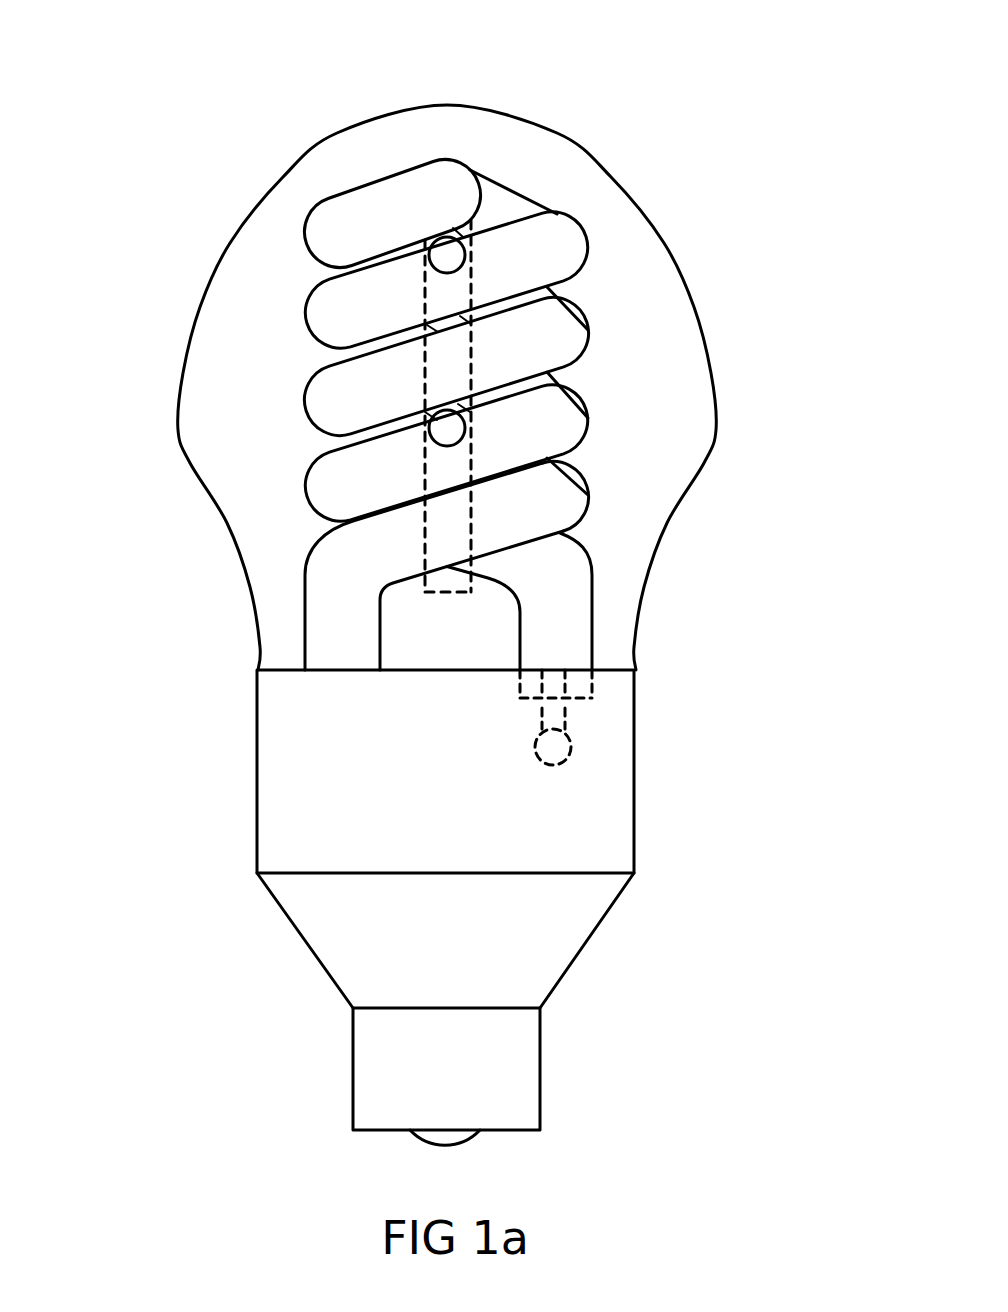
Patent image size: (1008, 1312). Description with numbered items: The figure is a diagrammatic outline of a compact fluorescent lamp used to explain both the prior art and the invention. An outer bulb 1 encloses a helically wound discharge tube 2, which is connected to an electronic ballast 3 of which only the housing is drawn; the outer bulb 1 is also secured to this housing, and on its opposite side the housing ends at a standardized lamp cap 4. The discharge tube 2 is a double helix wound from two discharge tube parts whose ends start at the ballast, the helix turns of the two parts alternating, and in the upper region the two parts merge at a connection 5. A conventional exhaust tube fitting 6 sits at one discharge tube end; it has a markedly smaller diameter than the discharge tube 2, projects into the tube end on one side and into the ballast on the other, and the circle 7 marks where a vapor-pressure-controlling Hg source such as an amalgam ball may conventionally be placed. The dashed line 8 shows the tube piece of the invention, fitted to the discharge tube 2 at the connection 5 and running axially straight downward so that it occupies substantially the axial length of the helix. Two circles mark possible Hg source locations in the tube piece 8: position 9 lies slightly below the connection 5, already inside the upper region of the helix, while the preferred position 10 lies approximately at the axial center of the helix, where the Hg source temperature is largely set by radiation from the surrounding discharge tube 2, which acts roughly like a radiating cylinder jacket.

The outer bulb 1 is at (207, 285).
The discharge tube 2 is at (590, 328).
The electronic ballast 3 is at (257, 770).
The lamp cap 4 is at (540, 1064).
The connection 5 is at (447, 160).
The exhaust tube fitting 6 is at (565, 677).
The Hg source 7 is at (553, 748).
The tube piece 8 is at (427, 461).
The position 9 is at (452, 254).
The position 10 is at (452, 429).